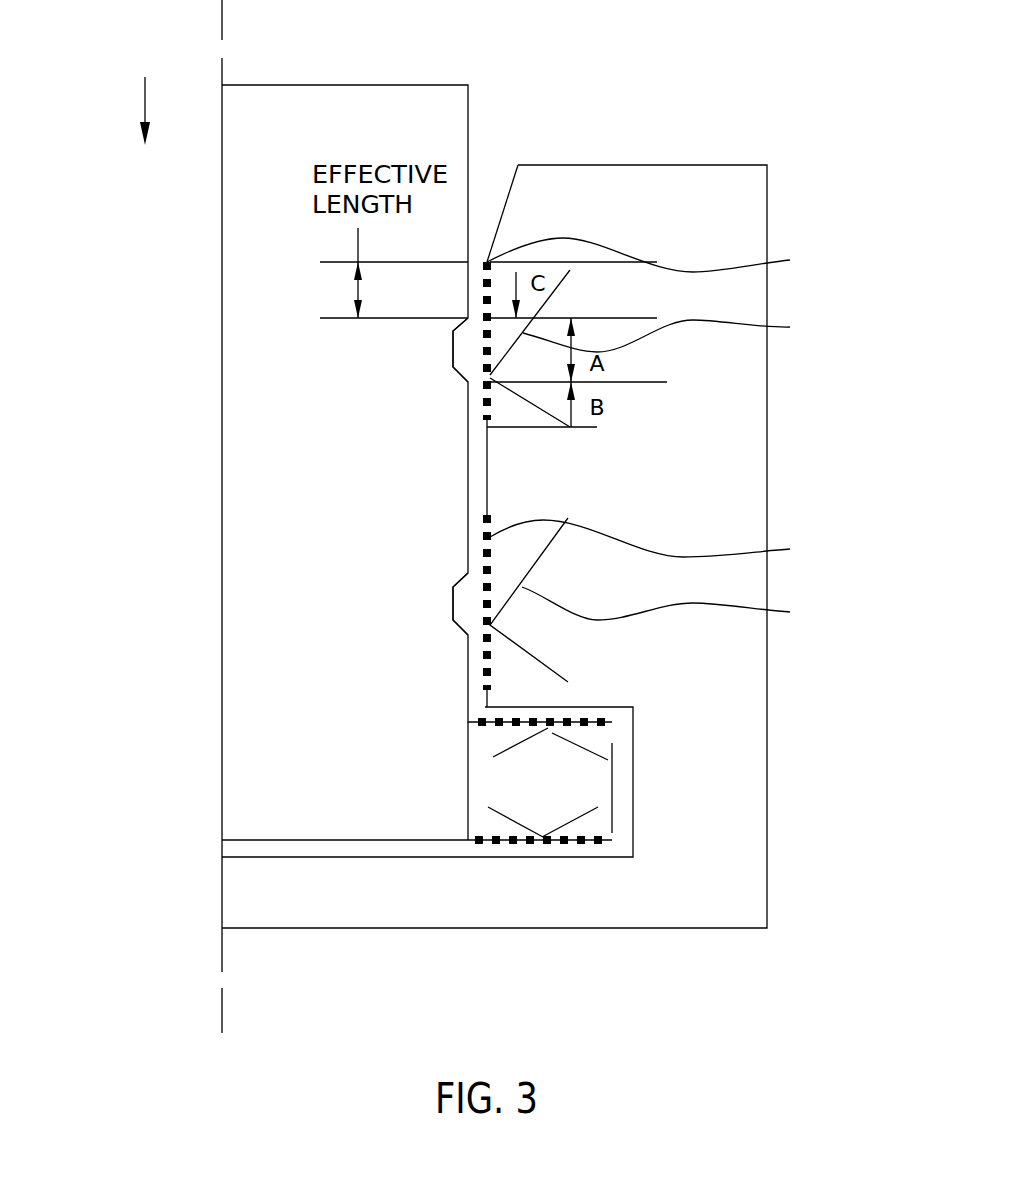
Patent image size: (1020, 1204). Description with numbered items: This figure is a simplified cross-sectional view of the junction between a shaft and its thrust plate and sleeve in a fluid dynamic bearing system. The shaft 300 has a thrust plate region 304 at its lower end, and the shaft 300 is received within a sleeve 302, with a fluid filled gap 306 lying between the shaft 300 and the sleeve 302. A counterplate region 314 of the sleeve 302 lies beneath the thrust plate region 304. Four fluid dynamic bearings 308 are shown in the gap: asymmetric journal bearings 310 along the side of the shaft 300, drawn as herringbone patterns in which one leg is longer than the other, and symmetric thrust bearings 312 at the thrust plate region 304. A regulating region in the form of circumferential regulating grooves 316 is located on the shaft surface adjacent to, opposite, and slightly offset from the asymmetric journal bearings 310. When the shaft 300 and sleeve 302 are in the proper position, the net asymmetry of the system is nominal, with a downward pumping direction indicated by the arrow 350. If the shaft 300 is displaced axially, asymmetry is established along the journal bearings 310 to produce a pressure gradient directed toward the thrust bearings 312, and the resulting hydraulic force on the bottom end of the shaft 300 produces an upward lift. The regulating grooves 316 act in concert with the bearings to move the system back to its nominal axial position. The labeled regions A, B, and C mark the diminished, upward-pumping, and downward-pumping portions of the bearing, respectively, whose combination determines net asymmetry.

The shaft 300 is at (278, 505).
The sleeve 302 is at (737, 500).
The thrust plate region 304 is at (318, 748).
The fluid filled gap 306 is at (625, 787).
The fluid dynamic bearings 308 is at (790, 260).
The asymmetric journal bearings 310 is at (790, 327).
The symmetric thrust bearings 312 is at (607, 723).
The counterplate region 314 is at (285, 900).
The circumferential regulating grooves 316 is at (453, 352).
The arrow 350 is at (145, 97).